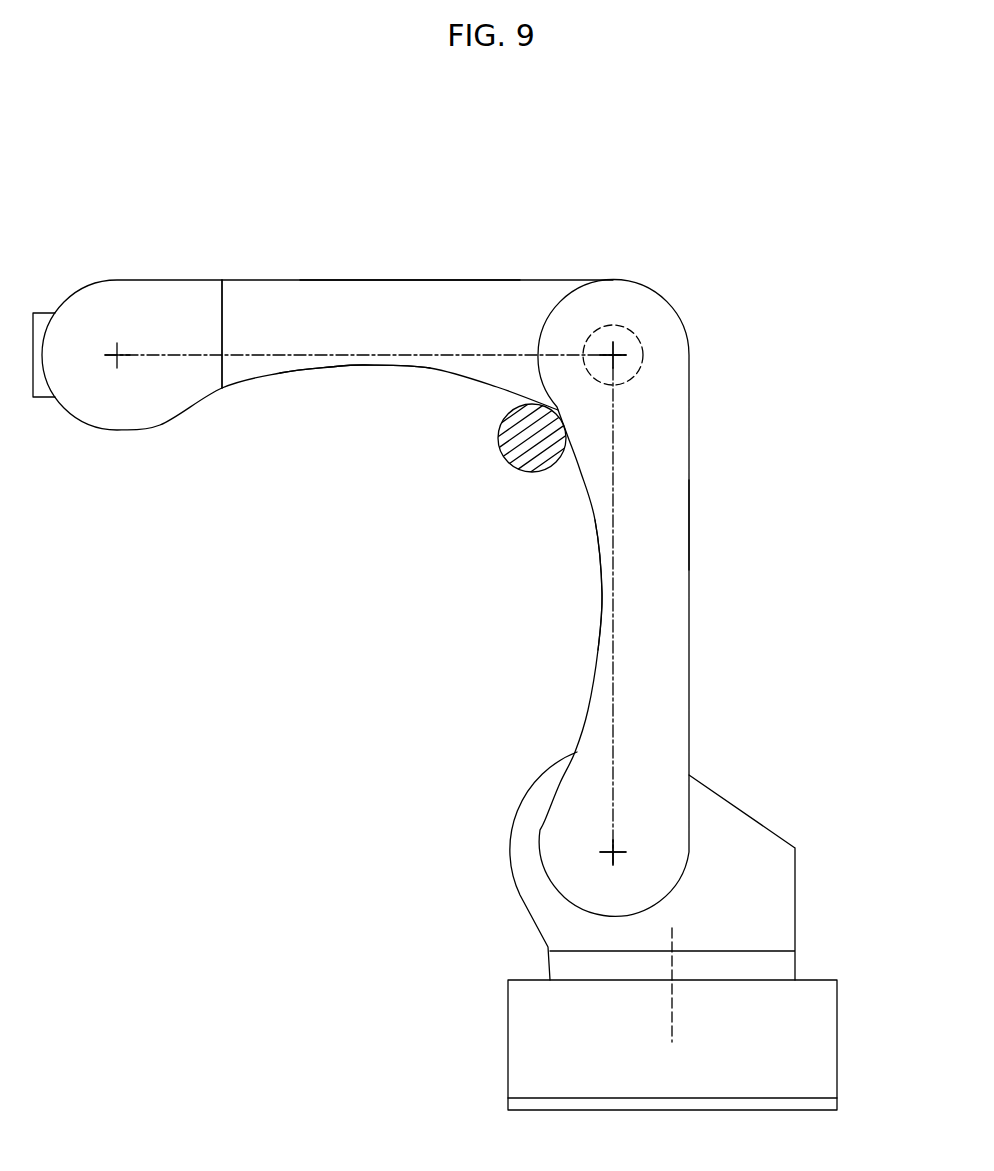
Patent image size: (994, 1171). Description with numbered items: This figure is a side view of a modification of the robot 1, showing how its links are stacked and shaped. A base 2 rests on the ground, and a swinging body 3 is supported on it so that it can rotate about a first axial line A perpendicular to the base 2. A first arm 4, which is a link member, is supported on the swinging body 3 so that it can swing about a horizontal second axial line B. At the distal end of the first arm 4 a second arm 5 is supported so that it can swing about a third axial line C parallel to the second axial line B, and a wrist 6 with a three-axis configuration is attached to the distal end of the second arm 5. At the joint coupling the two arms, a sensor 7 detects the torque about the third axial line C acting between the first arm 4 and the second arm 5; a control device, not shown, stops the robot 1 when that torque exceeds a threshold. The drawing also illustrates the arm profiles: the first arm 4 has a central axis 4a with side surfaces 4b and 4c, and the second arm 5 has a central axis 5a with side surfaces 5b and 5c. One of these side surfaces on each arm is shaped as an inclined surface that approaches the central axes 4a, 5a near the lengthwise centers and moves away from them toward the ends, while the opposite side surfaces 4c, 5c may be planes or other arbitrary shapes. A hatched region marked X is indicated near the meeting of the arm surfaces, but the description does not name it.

The robot 1 is at (742, 192).
The base 2 is at (837, 1036).
The swinging body 3 is at (797, 908).
The first arm 4 is at (652, 625).
The central axis 4a is at (613, 698).
The side surface 4b is at (601, 598).
The side surface 4c is at (689, 525).
The second arm 5 is at (258, 313).
The central axis 5a is at (270, 356).
The side surface 5b is at (361, 367).
The side surface 5c is at (413, 279).
The wrist 6 is at (130, 258).
The sensor 7 is at (613, 325).
The first axial line A is at (672, 1012).
The second axial line B is at (612, 852).
The third axial line C is at (622, 348).
The point X is at (500, 455).